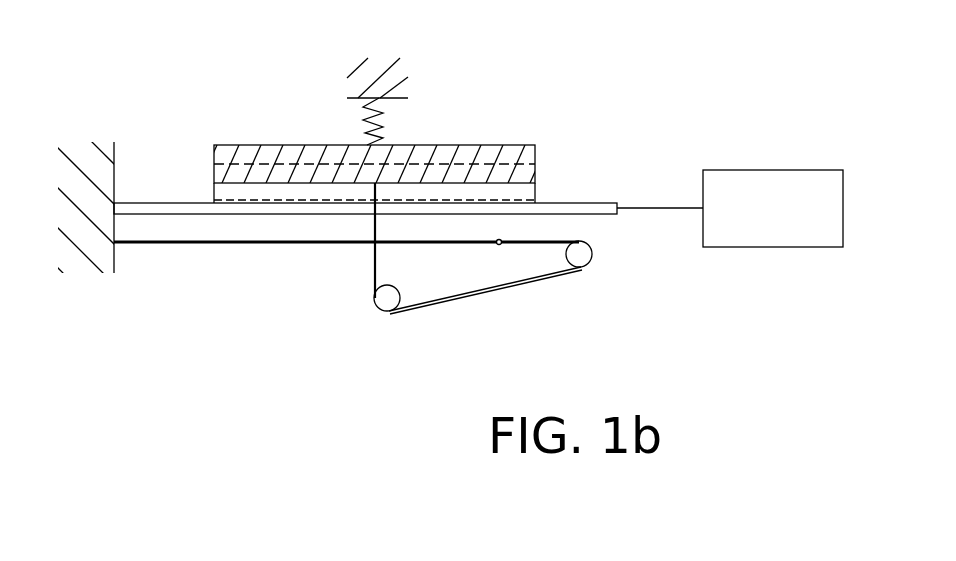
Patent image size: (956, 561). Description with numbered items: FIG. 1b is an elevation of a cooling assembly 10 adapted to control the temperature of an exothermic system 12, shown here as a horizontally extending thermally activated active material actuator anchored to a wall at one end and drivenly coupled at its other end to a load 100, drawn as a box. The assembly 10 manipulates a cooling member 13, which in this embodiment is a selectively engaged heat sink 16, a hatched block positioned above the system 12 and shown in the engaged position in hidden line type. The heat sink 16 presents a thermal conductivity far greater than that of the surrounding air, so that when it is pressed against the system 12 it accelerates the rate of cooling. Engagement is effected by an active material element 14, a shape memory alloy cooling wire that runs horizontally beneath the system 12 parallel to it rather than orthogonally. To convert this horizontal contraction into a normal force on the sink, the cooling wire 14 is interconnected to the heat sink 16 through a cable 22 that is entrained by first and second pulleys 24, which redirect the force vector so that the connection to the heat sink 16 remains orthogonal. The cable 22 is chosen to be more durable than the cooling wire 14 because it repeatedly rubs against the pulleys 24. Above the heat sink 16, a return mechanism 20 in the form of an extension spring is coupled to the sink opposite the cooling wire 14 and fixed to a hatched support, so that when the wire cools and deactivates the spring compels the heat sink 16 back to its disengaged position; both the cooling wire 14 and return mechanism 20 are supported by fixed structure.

The cooling assembly 10 is at (522, 97).
The exothermic system 12 is at (195, 212).
The cooling member 13 is at (242, 127).
The active material element 14 is at (243, 243).
The heat sink 16 is at (536, 171).
The return mechanism 20 is at (363, 120).
The cable 22 is at (485, 289).
The pulley 24 is at (587, 260).
The load 100 is at (792, 218).